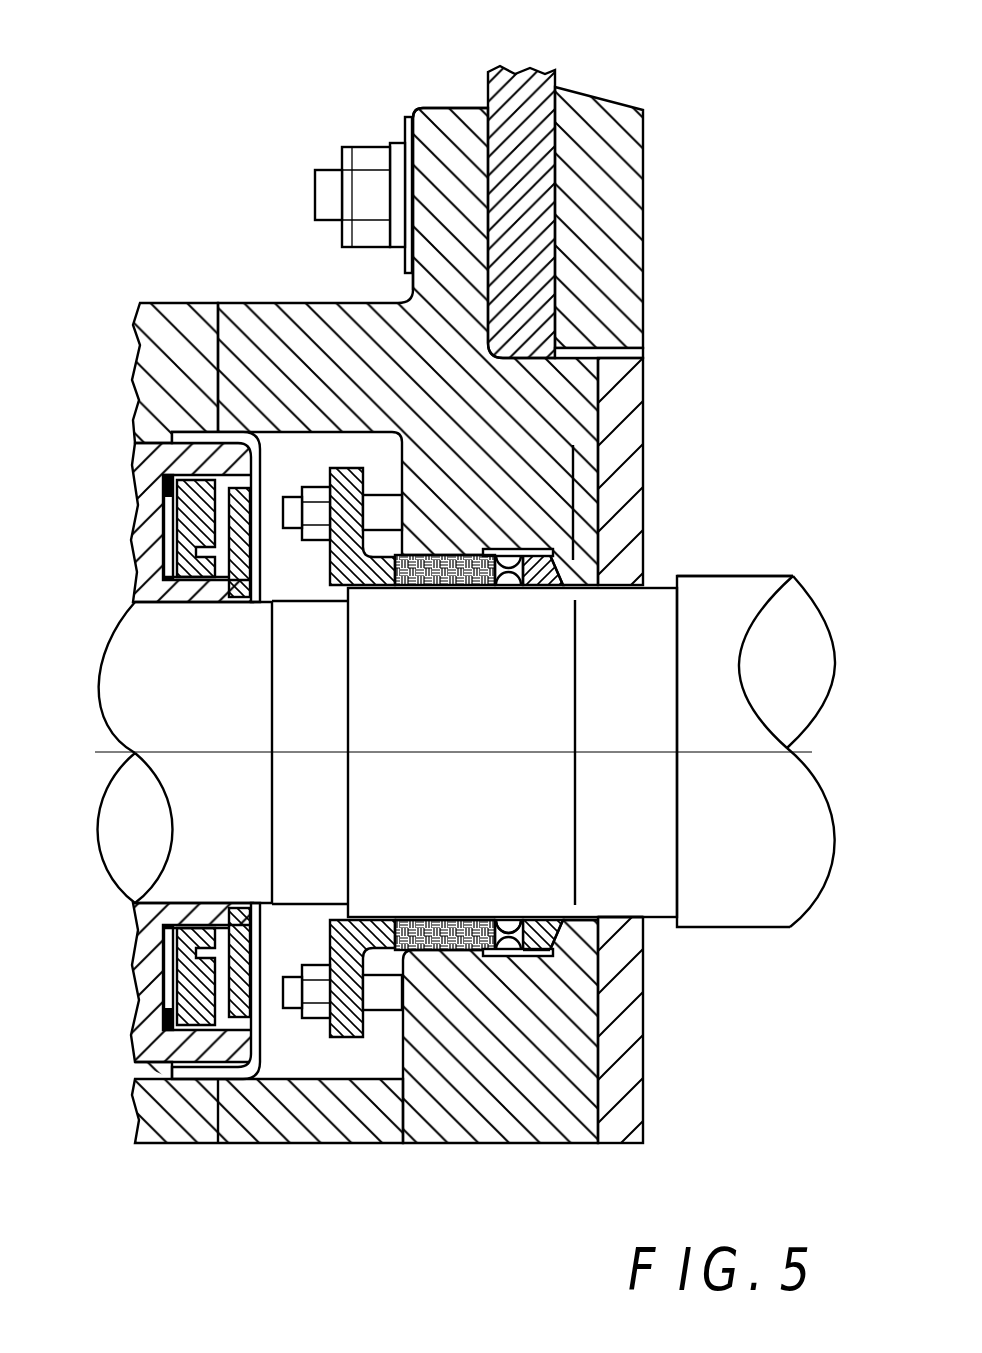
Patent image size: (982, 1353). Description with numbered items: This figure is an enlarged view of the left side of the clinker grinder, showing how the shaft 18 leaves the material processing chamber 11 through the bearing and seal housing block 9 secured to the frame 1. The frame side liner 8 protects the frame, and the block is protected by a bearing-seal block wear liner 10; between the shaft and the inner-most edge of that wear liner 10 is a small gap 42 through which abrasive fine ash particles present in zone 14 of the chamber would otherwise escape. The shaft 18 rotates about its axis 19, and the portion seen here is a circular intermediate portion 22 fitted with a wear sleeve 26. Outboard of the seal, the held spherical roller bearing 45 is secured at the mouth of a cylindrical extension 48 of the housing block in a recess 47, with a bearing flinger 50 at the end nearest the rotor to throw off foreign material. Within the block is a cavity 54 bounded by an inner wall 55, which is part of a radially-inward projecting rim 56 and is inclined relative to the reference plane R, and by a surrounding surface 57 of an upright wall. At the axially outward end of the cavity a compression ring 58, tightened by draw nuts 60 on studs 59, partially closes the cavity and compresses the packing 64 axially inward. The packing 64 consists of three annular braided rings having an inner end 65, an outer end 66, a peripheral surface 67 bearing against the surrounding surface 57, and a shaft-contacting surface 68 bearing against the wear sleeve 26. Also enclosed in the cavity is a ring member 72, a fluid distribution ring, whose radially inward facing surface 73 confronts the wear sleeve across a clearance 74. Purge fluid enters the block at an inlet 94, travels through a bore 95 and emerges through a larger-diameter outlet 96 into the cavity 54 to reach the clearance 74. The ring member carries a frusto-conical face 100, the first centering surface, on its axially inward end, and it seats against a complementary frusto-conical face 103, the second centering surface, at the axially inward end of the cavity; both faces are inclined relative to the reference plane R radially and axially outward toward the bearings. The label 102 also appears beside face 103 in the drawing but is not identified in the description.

The frame 1 is at (527, 85).
The frame side liner 8 is at (640, 88).
The bearing and seal housing block 9 is at (553, 417).
The bearing-seal block wear liner 10 is at (643, 407).
The material processing chamber 11 is at (742, 239).
The zone 14 is at (690, 551).
The shaft 18 is at (94, 836).
The axis 19 is at (790, 748).
The intermediate portion 22 is at (276, 912).
The wear sleeve 26 is at (652, 640).
The small gap 42 is at (652, 578).
The spherical roller bearing 45 is at (124, 521).
The recess 47 is at (308, 1074).
The cylindrical extension 48 is at (316, 1132).
The bearing flinger 50 is at (145, 333).
The cavity 54 is at (531, 955).
The inner wall 55 is at (552, 915).
The radially-inward projecting rim 56 is at (590, 916).
The surrounding surface 57 is at (447, 553).
The compression ring 58 is at (382, 494).
The stud 59 is at (347, 468).
The draw nut 60 is at (246, 433).
The packing 64 is at (489, 957).
The inner end 65 is at (493, 590).
The outer end 66 is at (395, 606).
The peripheral surface 67 is at (515, 955).
The shaft-contacting surface 68 is at (437, 917).
The ring member 72 is at (550, 1005).
The surface 73 is at (513, 943).
The clearance 74 is at (578, 614).
The inlet 94 is at (374, 332).
The bore 95 is at (522, 353).
The outlet 96 is at (523, 550).
The inclined frusto-conical face 100 is at (642, 926).
The face 102 is at (700, 872).
The inclined frusto-conical face 103 is at (590, 868).
The reference plane R is at (576, 710).